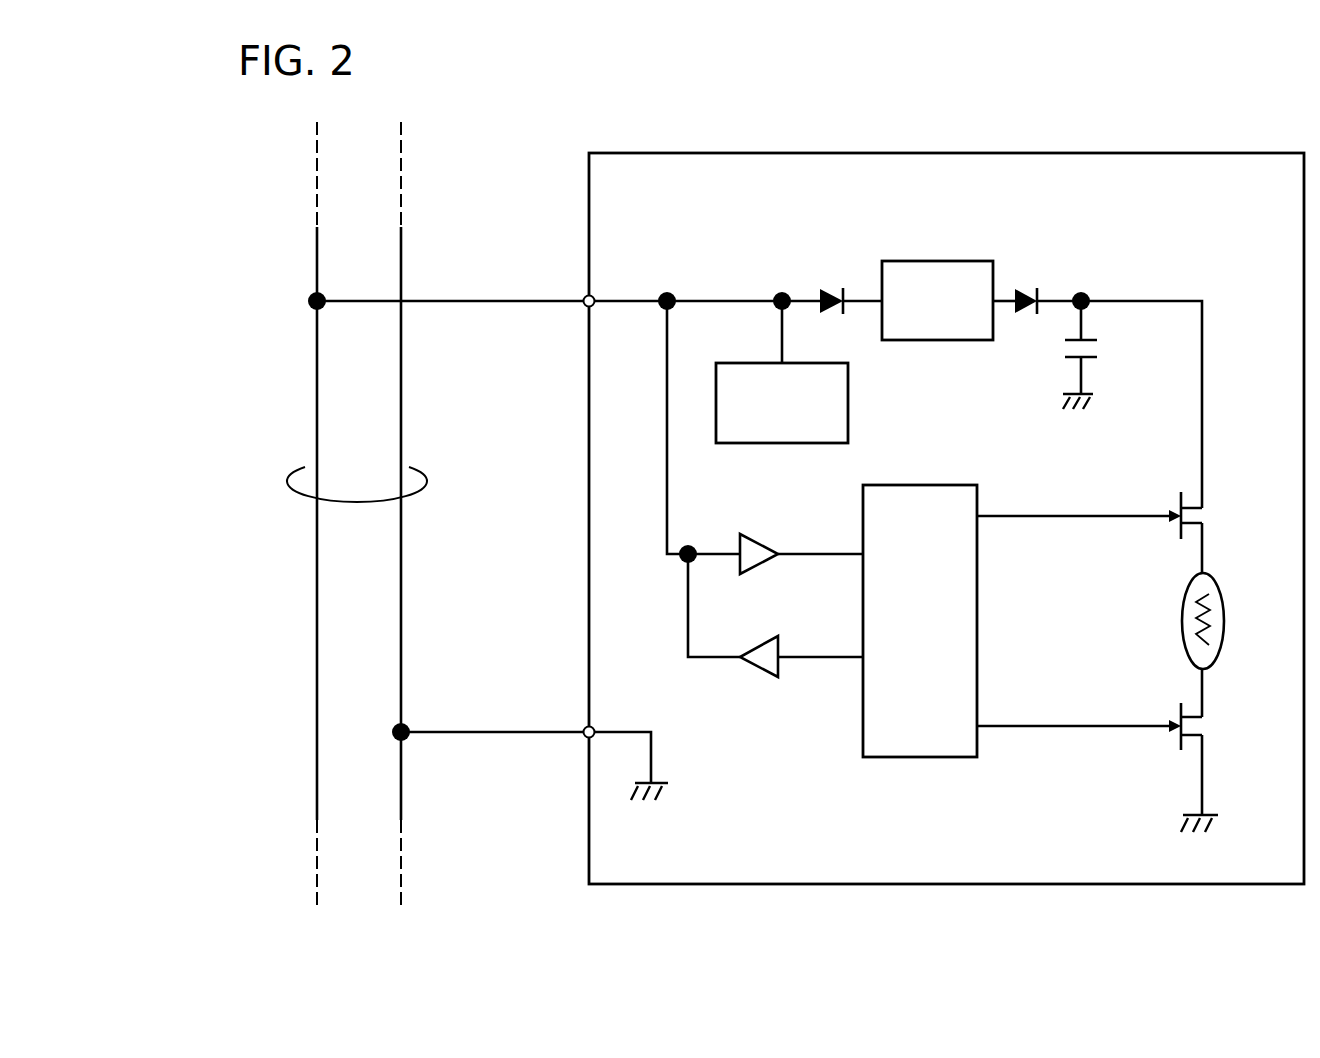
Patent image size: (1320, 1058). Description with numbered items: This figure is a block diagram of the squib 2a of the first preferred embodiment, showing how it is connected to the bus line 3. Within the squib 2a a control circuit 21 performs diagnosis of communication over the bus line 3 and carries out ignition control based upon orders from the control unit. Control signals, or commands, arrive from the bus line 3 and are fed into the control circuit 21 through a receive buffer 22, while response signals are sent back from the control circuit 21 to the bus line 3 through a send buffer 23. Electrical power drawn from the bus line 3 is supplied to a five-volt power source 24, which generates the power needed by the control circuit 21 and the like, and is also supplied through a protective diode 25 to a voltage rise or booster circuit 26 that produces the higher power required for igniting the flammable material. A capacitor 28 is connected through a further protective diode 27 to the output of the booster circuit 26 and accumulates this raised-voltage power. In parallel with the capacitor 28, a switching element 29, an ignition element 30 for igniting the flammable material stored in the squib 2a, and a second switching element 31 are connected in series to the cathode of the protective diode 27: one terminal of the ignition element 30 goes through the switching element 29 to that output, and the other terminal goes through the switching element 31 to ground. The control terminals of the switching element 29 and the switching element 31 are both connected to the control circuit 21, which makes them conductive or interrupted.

The squib 2a is at (947, 153).
The bus line 3 is at (425, 476).
The control circuit 21 is at (919, 758).
The receive buffer 22 is at (760, 534).
The send buffer 23 is at (760, 678).
The +5V power source 24 is at (848, 400).
The protective diode 25 is at (836, 286).
The voltage rise or booster circuit 26 is at (940, 261).
The protective diode 27 is at (1031, 286).
The capacitor 28 is at (1072, 363).
The switching element 29 is at (1180, 498).
The ignition element 30 is at (1182, 620).
The switching element 31 is at (1178, 748).